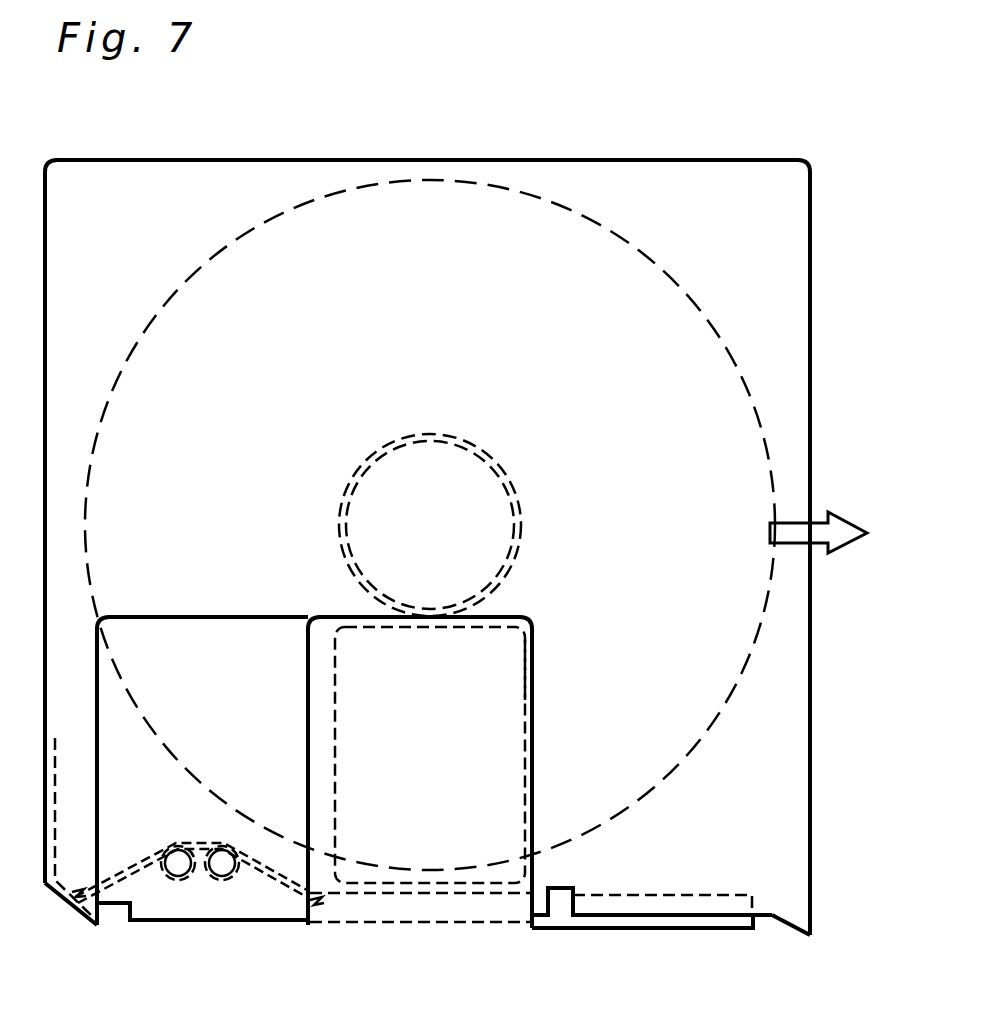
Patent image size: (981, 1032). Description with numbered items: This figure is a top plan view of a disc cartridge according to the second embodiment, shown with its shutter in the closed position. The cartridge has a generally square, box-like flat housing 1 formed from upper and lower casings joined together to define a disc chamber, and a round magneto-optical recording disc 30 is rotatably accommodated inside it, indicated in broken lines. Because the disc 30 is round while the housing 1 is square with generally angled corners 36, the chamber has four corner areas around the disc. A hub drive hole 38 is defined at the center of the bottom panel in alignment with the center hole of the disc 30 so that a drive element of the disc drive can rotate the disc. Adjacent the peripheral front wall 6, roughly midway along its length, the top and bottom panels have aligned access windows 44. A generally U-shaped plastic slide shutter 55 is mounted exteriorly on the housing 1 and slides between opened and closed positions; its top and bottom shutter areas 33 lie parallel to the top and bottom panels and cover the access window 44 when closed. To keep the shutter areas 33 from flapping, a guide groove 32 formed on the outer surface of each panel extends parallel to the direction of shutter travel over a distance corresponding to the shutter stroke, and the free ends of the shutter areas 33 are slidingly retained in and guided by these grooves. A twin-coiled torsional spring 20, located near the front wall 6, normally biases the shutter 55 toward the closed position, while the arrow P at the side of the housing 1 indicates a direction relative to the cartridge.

The housing 1 is at (787, 280).
The front wall 6 is at (275, 921).
The twin-coiled torsional spring 20 is at (205, 847).
The magneto-optical recording disc 30 is at (525, 193).
The guide groove 32 is at (200, 617).
The shutter area 33 is at (500, 743).
The angled corner 36 is at (45, 884).
The hub drive hole 38 is at (482, 458).
The access window 44 is at (345, 655).
The slide shutter 55 is at (527, 660).
The paper feed direction P is at (799, 534).